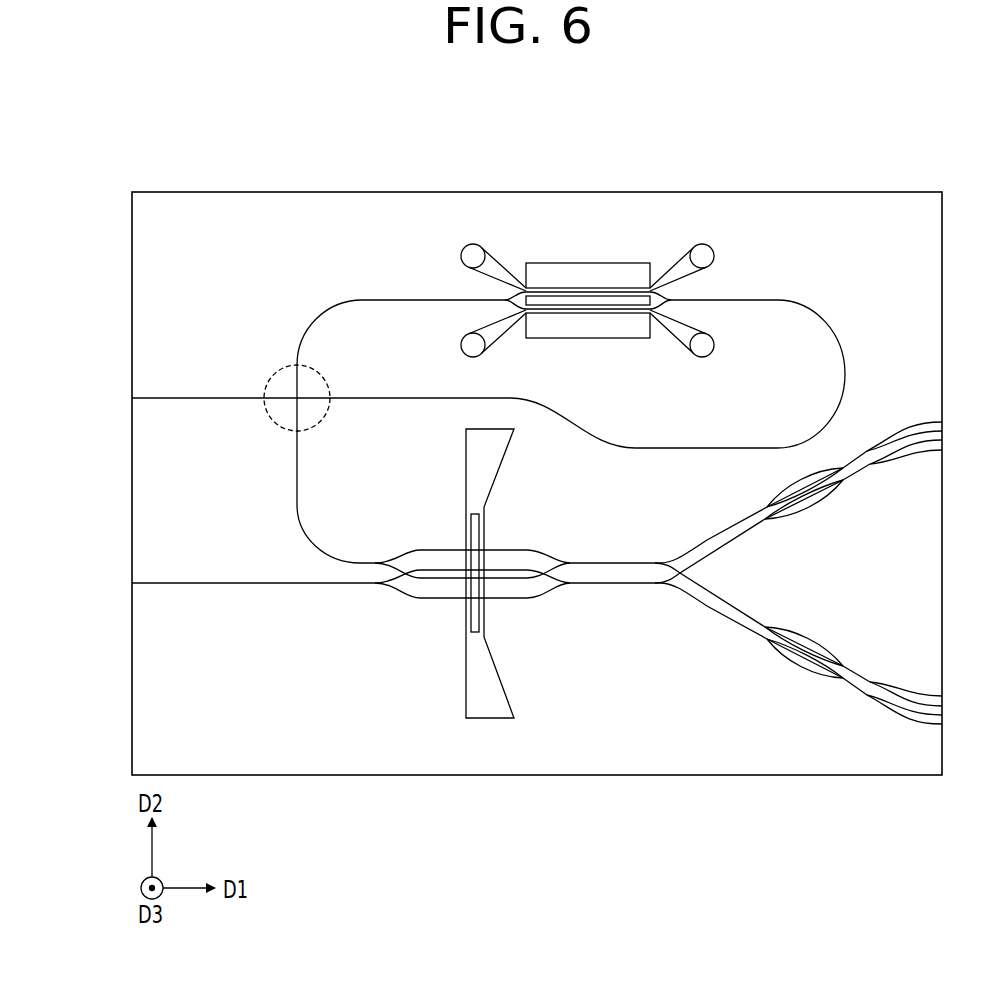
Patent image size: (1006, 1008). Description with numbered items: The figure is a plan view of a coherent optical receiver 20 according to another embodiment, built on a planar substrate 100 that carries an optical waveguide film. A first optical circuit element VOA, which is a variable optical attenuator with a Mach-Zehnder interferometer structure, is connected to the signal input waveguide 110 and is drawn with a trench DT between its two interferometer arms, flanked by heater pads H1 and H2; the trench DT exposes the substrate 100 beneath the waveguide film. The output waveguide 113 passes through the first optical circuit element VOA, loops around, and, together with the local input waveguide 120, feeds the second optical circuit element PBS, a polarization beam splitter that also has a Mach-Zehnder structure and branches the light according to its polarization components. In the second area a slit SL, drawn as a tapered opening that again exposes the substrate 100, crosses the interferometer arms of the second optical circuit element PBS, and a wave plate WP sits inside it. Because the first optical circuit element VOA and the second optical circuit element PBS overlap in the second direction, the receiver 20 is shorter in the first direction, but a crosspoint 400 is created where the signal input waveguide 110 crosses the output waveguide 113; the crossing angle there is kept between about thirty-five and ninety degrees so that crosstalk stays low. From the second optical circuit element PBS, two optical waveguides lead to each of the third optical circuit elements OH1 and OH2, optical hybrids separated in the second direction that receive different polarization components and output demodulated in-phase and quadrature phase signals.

The coherent optical receiver 20 is at (937, 155).
The substrate 100 is at (588, 336).
The signal input waveguide 110 is at (183, 398).
The output waveguide 113 is at (362, 298).
The local input waveguide 120 is at (195, 583).
The crosspoint 400 is at (279, 368).
The first optical circuit element VOA is at (573, 276).
The trench DT is at (590, 262).
The first heater H1 is at (714, 254).
The second heater H2 is at (712, 343).
The second optical circuit element PBS is at (517, 573).
The wave plate WP is at (476, 531).
The slit SL is at (500, 676).
The third optical circuit element OH1 is at (830, 514).
The third optical circuit element OH2 is at (832, 634).